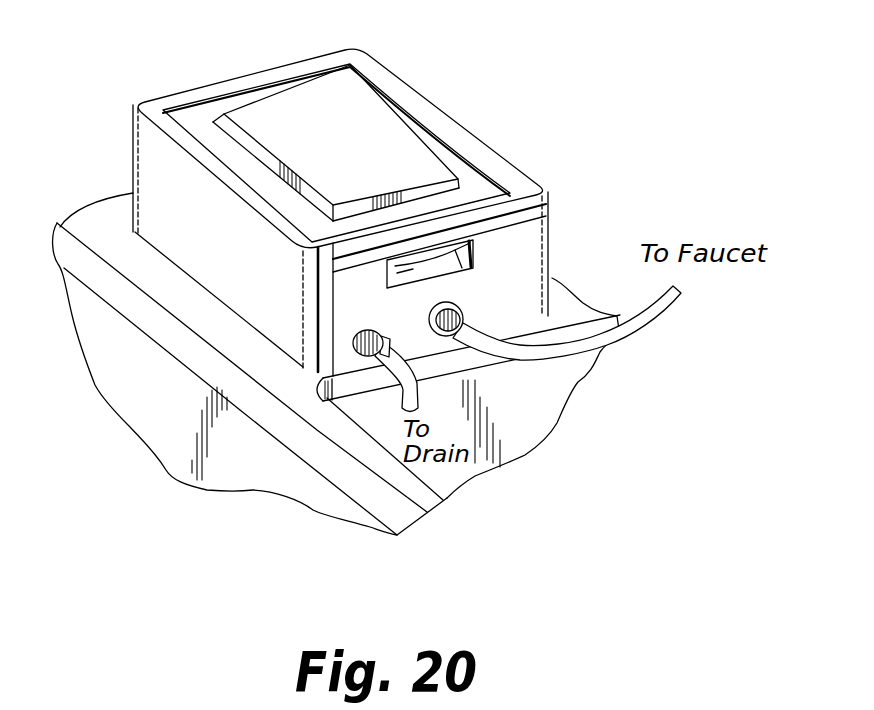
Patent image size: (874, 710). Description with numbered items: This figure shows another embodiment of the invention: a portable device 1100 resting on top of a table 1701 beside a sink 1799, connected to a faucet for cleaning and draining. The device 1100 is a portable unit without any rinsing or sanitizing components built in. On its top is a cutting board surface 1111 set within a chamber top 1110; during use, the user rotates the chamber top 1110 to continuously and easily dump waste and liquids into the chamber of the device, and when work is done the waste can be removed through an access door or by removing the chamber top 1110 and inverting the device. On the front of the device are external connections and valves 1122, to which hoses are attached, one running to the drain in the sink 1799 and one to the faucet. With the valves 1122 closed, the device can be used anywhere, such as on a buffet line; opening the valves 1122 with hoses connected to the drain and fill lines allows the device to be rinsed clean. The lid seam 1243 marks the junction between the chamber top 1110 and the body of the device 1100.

The device 1100 is at (446, 82).
The chamber top 1110 is at (250, 110).
The cutting board surface 1111 is at (336, 143).
The lid seam 1243 is at (553, 221).
The external connections and valves 1122 is at (465, 318).
The table 1701 is at (103, 213).
The sink 1799 is at (468, 389).